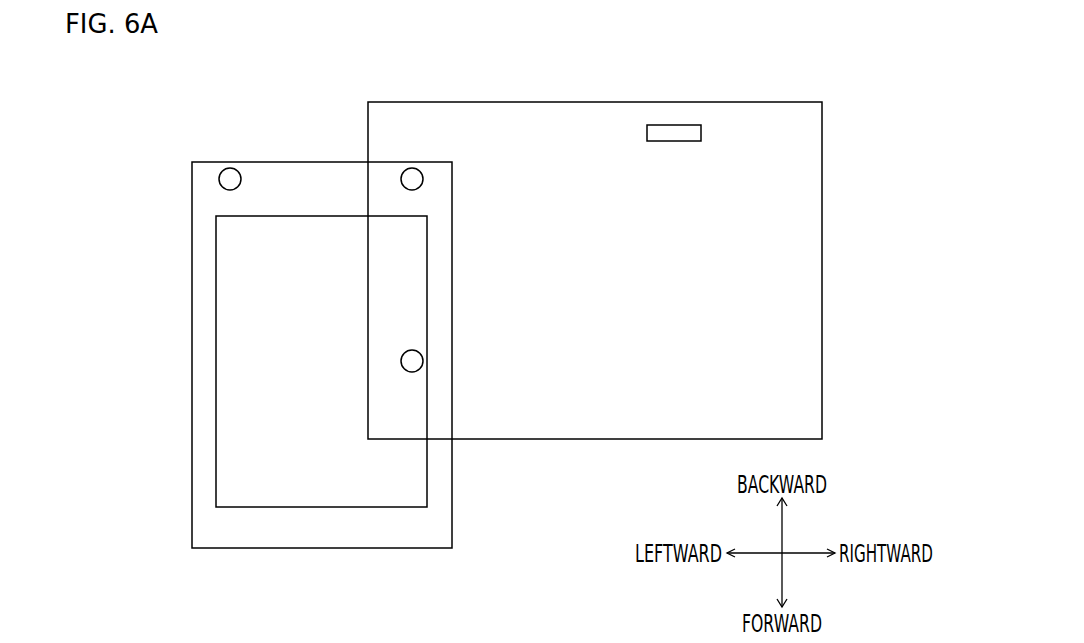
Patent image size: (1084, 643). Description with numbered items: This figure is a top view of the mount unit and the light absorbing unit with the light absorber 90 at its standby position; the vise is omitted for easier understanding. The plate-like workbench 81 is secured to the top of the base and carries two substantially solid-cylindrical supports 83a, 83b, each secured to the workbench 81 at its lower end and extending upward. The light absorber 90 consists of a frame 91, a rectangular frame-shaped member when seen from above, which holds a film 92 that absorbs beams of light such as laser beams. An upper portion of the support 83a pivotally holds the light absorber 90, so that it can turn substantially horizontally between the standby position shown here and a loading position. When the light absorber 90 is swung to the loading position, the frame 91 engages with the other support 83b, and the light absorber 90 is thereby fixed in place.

The workbench 81 is at (805, 199).
The support 83a is at (412, 168).
The support 83b is at (422, 368).
The light absorber 90 is at (315, 327).
The frame 91 is at (190, 269).
The film 92 is at (317, 483).